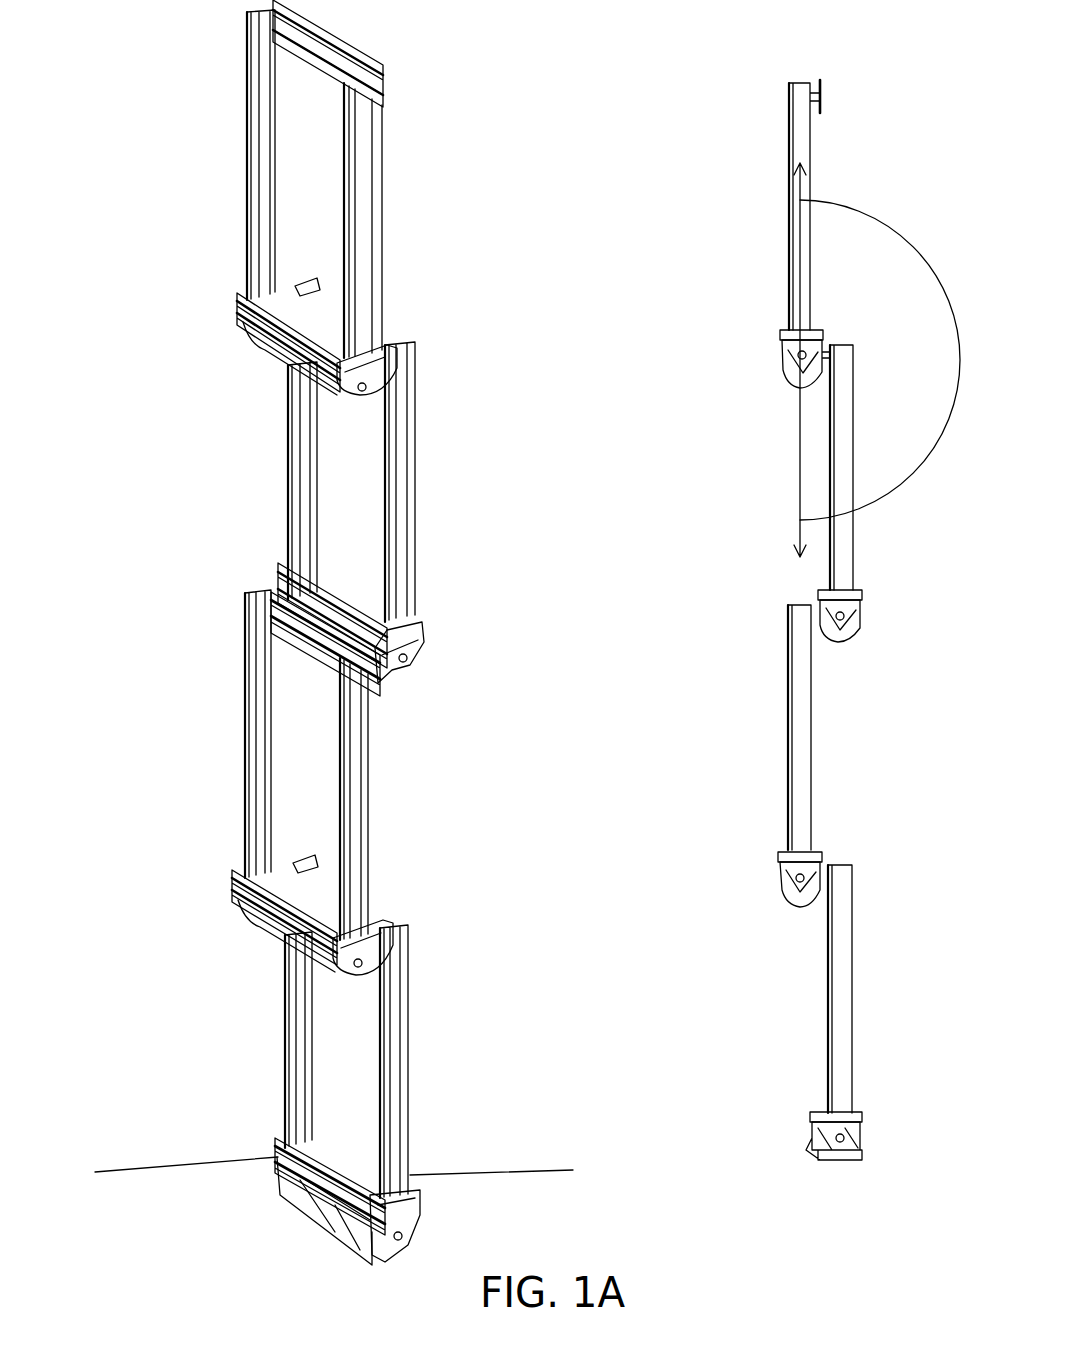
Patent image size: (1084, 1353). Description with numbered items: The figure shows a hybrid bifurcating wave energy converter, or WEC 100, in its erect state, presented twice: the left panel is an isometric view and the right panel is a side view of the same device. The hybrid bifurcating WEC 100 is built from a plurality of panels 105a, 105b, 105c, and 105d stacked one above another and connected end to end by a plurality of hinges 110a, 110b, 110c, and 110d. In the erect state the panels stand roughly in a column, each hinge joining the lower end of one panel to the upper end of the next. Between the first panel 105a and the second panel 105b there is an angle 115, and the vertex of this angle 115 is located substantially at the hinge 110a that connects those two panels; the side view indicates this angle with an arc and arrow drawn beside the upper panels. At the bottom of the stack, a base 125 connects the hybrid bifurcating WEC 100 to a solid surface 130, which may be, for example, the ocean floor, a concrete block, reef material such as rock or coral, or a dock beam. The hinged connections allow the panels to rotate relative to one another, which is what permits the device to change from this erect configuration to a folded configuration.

The hybrid bifurcating wave energy converter 100 is at (104, 248).
The first panel 105a is at (342, 220).
The second panel 105b is at (385, 487).
The panel 105c is at (338, 754).
The panel 105d is at (378, 1031).
The hinge 110a is at (238, 378).
The hinge 110b is at (439, 658).
The hinge 110c is at (219, 893).
The hinge 110d is at (431, 1162).
The angle 115 is at (877, 360).
The base 125 is at (280, 1176).
The solid surface 130 is at (262, 1232).